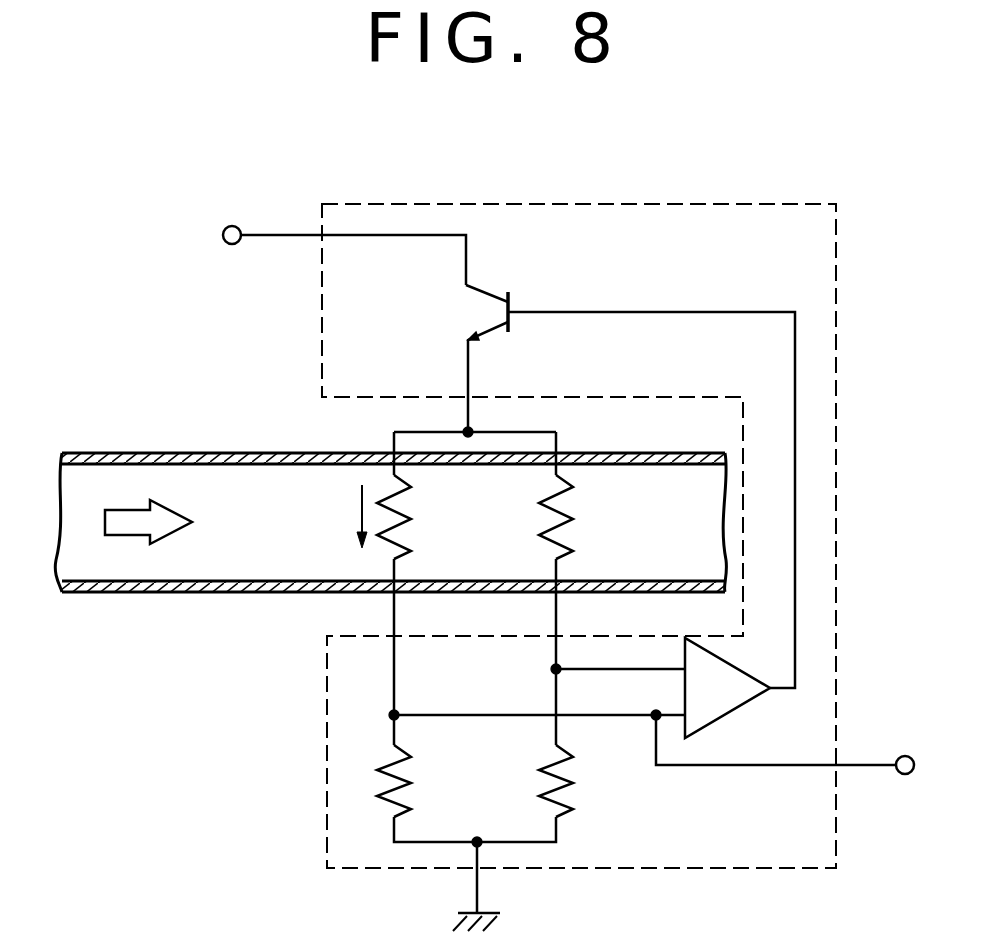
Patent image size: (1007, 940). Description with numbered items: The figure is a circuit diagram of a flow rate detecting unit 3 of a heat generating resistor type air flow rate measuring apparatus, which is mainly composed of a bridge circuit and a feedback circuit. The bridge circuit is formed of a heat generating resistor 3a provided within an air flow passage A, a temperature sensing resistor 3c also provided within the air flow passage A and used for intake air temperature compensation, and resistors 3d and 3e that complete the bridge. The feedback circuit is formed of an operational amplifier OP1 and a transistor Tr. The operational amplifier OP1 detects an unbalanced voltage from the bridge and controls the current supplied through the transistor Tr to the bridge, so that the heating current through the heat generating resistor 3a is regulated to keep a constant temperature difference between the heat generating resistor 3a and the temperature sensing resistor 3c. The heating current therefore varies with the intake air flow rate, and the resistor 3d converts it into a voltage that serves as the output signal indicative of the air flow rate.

The flow rate detecting unit 3 is at (786, 253).
The heat generating resistor 3a is at (421, 514).
The temperature sensing resistor 3c is at (581, 514).
The resistor 3d is at (418, 781).
The resistor 3e is at (581, 781).
The air flow passage A is at (246, 450).
The transistor Tr is at (500, 350).
The operational amplifier OP1 is at (727, 688).